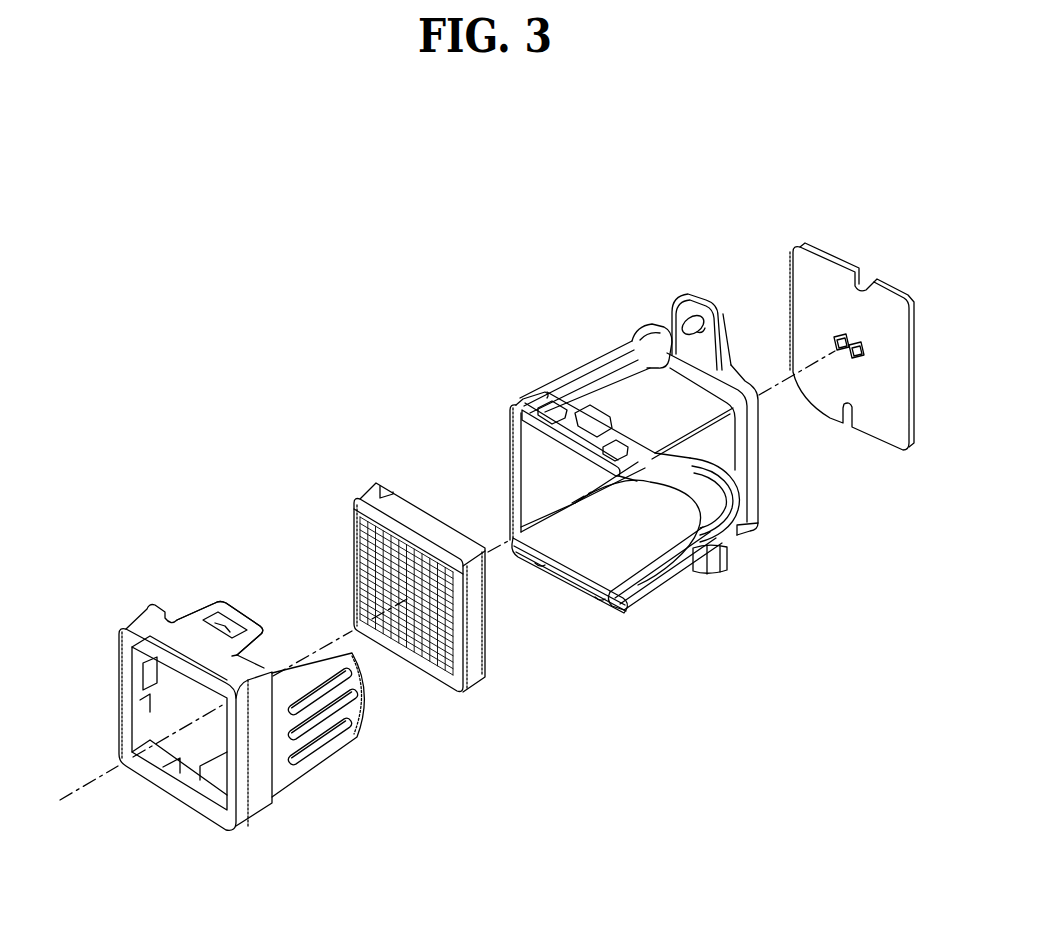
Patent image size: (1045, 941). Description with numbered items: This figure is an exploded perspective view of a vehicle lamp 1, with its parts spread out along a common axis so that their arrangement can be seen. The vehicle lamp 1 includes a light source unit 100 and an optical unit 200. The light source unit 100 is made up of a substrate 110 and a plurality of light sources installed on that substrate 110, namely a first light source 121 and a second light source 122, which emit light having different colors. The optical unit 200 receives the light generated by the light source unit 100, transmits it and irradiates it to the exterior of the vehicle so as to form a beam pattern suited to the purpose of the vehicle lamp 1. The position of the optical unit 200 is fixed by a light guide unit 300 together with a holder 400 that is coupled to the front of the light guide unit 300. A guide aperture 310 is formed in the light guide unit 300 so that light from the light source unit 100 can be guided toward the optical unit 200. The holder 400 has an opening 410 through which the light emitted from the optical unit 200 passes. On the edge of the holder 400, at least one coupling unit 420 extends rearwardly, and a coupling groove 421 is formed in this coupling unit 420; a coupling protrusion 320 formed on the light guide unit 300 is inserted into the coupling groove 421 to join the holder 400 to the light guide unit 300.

The vehicle lamp 1 is at (367, 229).
The light source unit 100 is at (892, 505).
The substrate 110 is at (898, 442).
The first light source 121 is at (858, 358).
The second light source 122 is at (840, 350).
The optical unit 200 is at (487, 700).
The light guide unit 300 is at (643, 397).
The guide aperture 310 is at (618, 556).
The coupling protrusion 320 is at (584, 416).
The holder 400 is at (259, 810).
The opening 410 is at (164, 697).
The coupling unit 420 is at (208, 612).
The coupling groove 421 is at (228, 617).